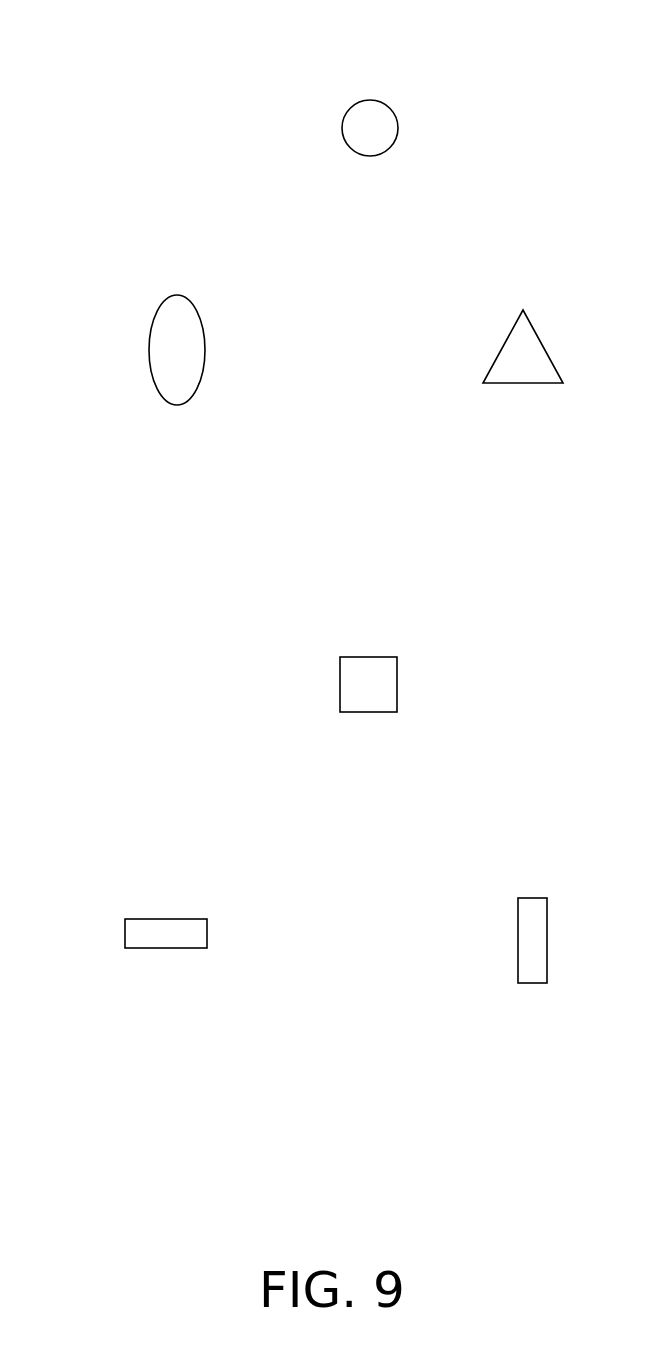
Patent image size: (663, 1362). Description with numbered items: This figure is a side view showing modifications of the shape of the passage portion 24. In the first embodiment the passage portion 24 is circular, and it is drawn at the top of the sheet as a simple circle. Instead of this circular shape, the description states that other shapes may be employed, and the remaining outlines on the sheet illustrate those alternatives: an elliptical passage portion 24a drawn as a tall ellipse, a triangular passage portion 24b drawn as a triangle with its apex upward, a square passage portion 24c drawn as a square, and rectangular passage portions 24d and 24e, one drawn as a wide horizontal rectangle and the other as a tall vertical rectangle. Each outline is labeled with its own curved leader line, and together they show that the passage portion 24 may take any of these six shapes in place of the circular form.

The passage portion 24 is at (350, 107).
The elliptical passage portion 24a is at (160, 300).
The triangular passage portion 24b is at (503, 347).
The square passage portion 24c is at (348, 655).
The rectangular passage portion 24d is at (152, 918).
The rectangular passage portion 24e is at (532, 897).